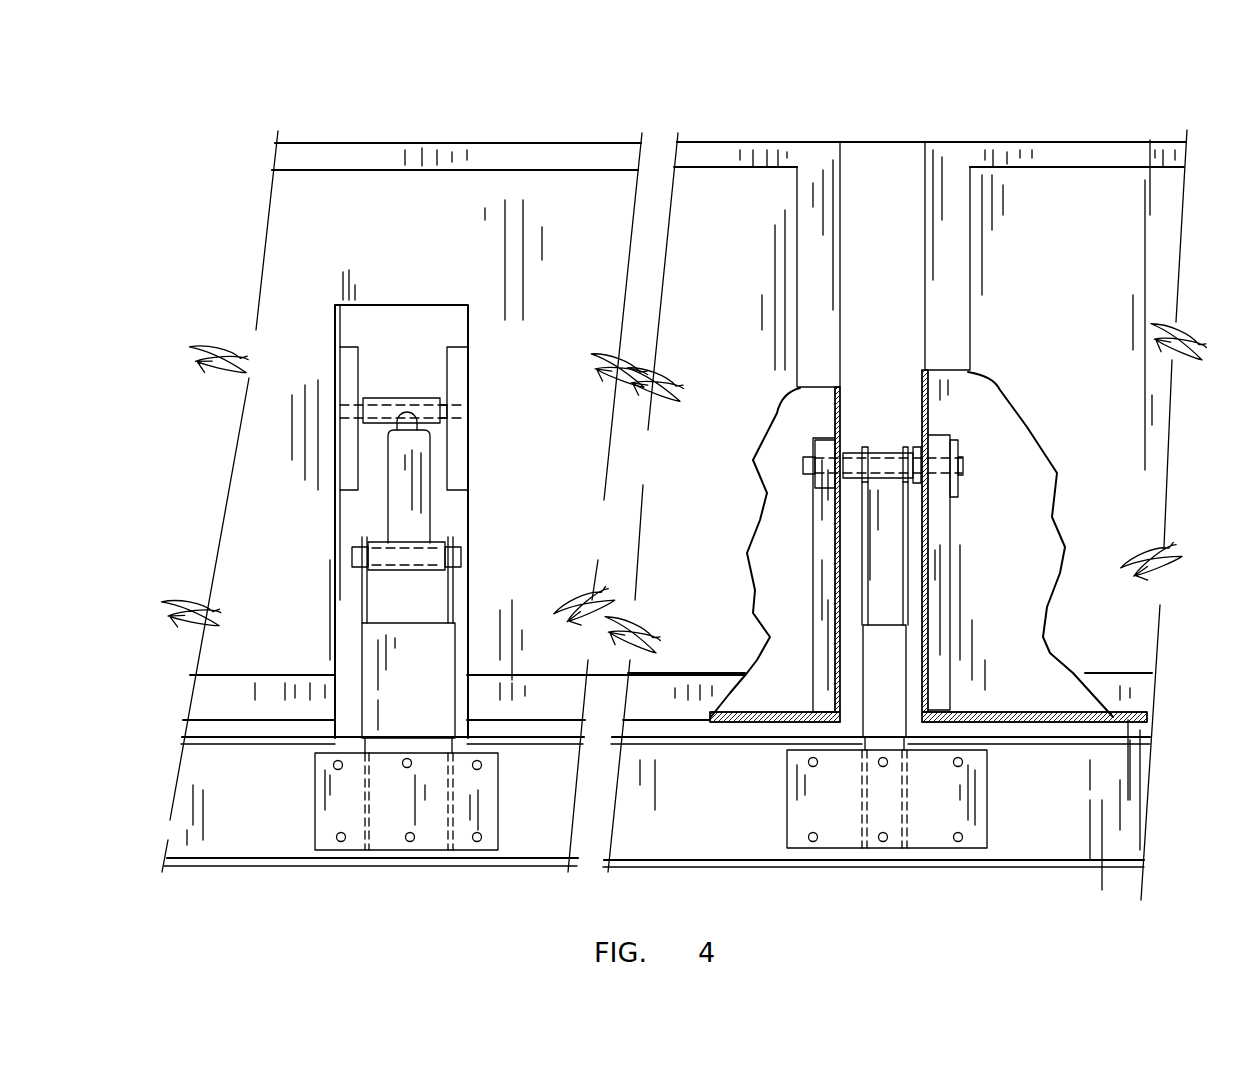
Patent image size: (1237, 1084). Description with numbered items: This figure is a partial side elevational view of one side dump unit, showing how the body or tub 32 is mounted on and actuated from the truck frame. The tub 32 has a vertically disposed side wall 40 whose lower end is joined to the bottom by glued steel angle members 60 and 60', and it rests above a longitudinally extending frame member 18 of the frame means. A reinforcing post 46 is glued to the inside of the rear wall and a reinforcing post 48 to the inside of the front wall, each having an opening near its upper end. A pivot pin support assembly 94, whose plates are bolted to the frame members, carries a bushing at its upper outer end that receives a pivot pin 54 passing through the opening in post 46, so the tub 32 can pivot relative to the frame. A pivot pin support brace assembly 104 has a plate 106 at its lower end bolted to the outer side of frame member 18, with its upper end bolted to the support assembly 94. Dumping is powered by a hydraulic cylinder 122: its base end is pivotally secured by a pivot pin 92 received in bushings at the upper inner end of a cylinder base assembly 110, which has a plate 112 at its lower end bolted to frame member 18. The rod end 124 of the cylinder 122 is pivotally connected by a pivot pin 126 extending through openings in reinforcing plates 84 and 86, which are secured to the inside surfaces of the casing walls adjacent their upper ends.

The body or tub 32 is at (398, 180).
The side wall 40 is at (433, 240).
The frame member 18 is at (261, 801).
The angle member 60 is at (887, 630).
The angle member 60' is at (430, 678).
The reinforcing plate 86 is at (347, 363).
The reinforcing plate 84 is at (455, 374).
The pivot pin 126 is at (446, 407).
The rod end 124 is at (396, 397).
The hydraulic cylinder 122 is at (400, 491).
The pivot pin 92 is at (464, 557).
The cylinder base assembly 110 is at (428, 682).
The plate 112 is at (470, 798).
The reinforcing post 46 is at (822, 517).
The reinforcing post 48 is at (940, 528).
The pivot pin support assembly 94 is at (928, 437).
The pivot pin 54 is at (962, 467).
The pivot pin support brace assembly 104 is at (883, 685).
The plate 106 is at (975, 785).